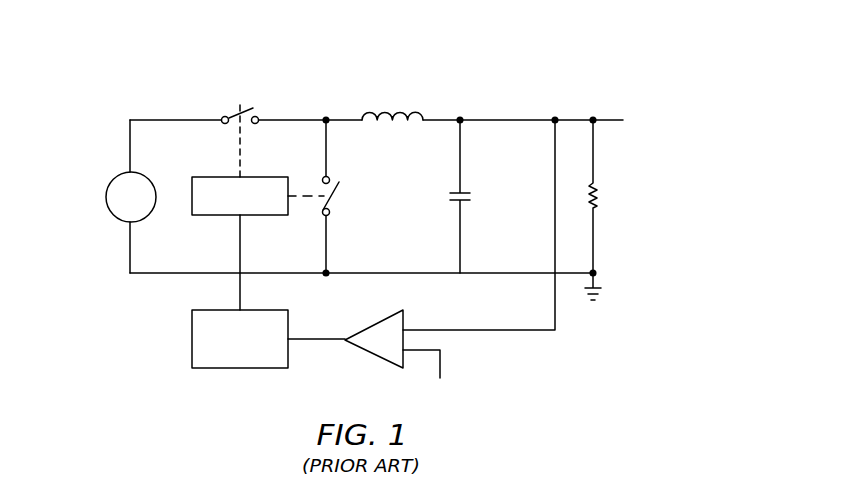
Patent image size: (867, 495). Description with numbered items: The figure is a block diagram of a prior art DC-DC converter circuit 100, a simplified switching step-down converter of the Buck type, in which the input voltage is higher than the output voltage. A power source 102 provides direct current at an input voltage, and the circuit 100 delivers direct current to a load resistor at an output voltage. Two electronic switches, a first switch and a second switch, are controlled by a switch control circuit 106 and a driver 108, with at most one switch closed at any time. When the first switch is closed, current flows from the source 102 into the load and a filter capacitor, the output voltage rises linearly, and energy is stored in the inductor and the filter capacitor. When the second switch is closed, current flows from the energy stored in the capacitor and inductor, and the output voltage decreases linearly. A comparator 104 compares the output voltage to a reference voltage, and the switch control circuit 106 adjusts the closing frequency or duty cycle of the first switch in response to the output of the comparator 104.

The DC-DC converter circuit 100 is at (497, 74).
The power source 102 is at (106, 198).
The comparator 104 is at (373, 357).
The switch control circuit 106 is at (192, 346).
The driver 108 is at (222, 215).